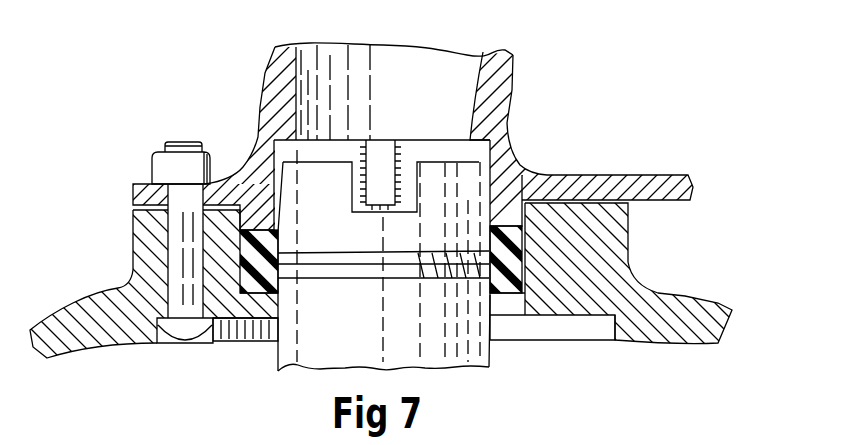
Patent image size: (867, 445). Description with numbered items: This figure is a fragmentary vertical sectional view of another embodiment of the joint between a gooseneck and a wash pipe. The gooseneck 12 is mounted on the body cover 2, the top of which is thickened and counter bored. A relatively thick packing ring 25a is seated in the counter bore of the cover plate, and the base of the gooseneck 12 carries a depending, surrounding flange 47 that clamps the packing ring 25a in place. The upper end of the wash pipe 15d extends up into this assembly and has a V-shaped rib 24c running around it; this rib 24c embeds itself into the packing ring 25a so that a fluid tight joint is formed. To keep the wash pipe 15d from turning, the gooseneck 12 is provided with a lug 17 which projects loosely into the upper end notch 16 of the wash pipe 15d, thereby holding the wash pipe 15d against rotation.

The body cover 2 is at (62, 312).
The gooseneck 12 is at (500, 83).
The upper end notch 16 is at (357, 175).
The lug 17 is at (378, 150).
The depending surrounding flange 47 is at (509, 213).
The packing ring 25a is at (515, 253).
The V-shaped rib 24c is at (307, 273).
The wash pipe 15d is at (489, 357).